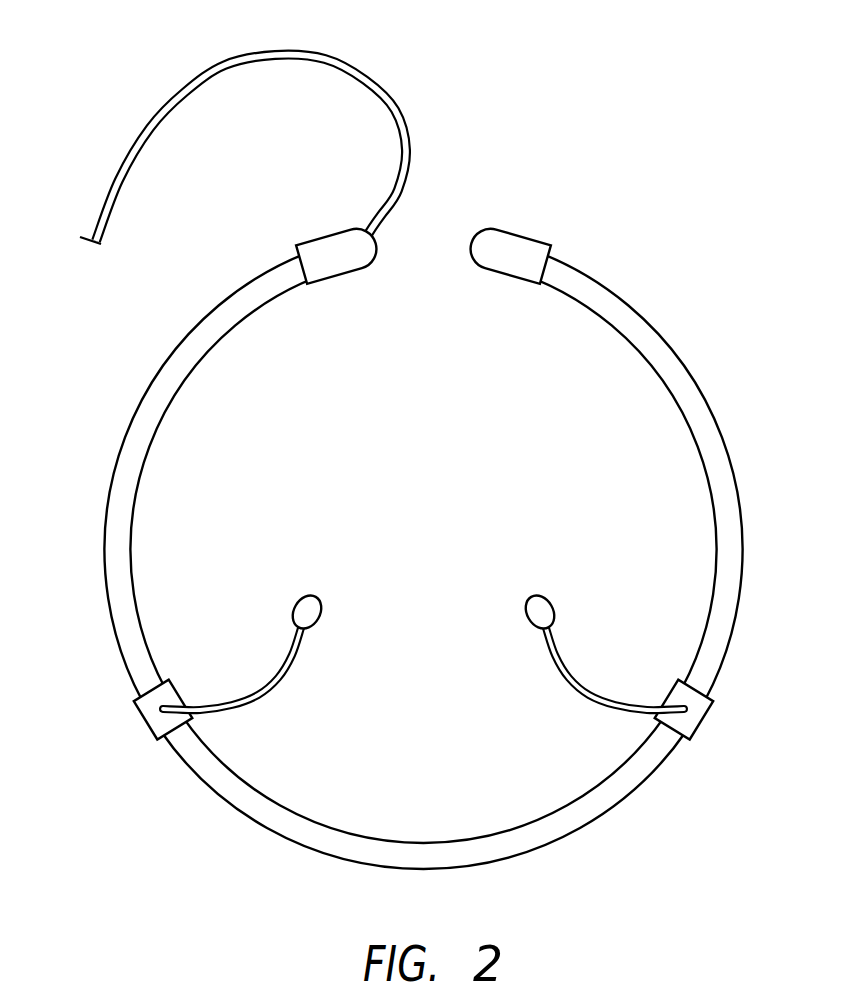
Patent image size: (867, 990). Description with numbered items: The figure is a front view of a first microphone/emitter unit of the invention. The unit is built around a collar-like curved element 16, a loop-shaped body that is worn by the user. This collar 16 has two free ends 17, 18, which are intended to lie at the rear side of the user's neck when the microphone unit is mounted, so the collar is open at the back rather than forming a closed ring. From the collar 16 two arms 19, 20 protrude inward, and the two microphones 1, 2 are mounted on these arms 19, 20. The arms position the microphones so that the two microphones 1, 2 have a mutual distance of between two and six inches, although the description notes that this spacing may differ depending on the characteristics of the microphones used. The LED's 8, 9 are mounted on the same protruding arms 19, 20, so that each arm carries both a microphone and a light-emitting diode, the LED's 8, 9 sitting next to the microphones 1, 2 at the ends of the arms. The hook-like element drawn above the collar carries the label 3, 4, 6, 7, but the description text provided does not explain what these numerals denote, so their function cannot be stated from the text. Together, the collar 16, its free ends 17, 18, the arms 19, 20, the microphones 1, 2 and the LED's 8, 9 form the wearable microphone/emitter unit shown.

The microphone 1 is at (308, 593).
The microphone 2 is at (536, 597).
The hook 3 is at (291, 149).
The hook body 4 is at (291, 149).
The hook tube 6 is at (291, 149).
The hook end 7 is at (392, 100).
The LED 8 is at (295, 607).
The LED 9 is at (547, 602).
The collar-like curved element 16 is at (293, 827).
The free end 17 is at (378, 250).
The free end 18 is at (483, 223).
The arm 19 is at (268, 692).
The arm 20 is at (580, 692).